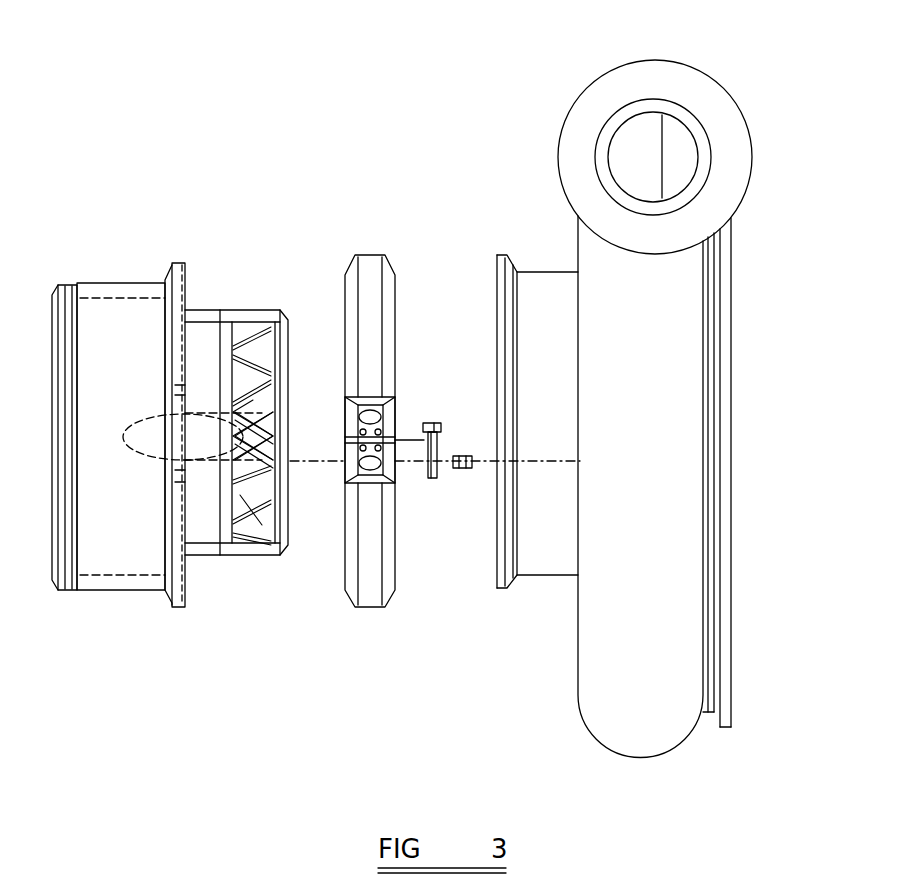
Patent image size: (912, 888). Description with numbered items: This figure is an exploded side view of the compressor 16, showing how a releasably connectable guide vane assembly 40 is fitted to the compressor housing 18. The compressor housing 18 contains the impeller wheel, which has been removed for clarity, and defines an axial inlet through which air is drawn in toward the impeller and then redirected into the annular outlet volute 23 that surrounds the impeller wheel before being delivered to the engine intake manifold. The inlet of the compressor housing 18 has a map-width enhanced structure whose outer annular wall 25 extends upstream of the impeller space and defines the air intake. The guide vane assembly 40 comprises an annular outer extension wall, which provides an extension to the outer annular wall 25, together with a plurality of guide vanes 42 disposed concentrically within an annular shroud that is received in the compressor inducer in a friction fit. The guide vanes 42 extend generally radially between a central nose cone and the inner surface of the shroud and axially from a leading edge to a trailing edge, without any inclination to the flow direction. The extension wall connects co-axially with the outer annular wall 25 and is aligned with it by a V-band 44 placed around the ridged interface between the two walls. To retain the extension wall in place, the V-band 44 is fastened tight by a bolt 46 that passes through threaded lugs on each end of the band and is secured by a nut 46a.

The compressor 16 is at (768, 448).
The compressor housing 18 is at (655, 548).
The annular outlet volute 23 is at (223, 312).
The outer annular wall 25 is at (548, 283).
The guide vane assembly 40 is at (108, 260).
The guide vanes 42 is at (242, 497).
The V-band 44 is at (372, 255).
The bolt 46 is at (433, 424).
The nut 46a is at (465, 470).